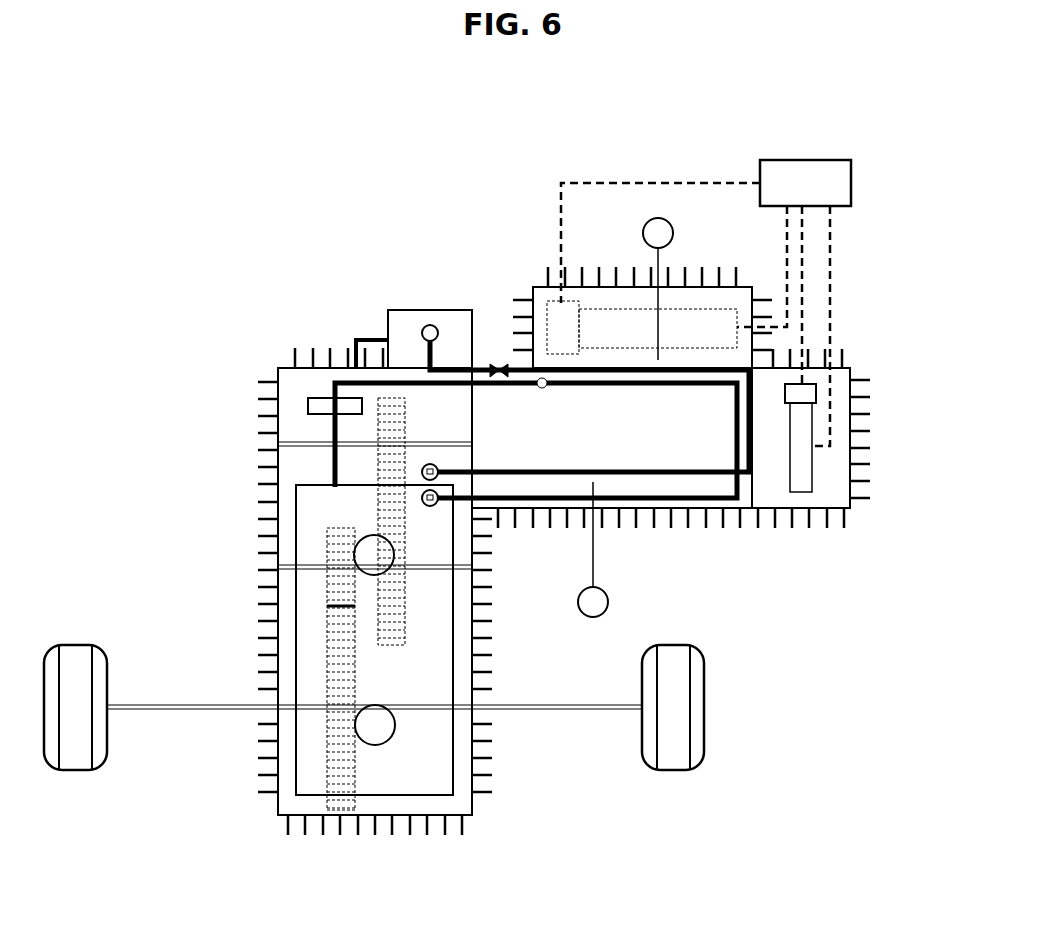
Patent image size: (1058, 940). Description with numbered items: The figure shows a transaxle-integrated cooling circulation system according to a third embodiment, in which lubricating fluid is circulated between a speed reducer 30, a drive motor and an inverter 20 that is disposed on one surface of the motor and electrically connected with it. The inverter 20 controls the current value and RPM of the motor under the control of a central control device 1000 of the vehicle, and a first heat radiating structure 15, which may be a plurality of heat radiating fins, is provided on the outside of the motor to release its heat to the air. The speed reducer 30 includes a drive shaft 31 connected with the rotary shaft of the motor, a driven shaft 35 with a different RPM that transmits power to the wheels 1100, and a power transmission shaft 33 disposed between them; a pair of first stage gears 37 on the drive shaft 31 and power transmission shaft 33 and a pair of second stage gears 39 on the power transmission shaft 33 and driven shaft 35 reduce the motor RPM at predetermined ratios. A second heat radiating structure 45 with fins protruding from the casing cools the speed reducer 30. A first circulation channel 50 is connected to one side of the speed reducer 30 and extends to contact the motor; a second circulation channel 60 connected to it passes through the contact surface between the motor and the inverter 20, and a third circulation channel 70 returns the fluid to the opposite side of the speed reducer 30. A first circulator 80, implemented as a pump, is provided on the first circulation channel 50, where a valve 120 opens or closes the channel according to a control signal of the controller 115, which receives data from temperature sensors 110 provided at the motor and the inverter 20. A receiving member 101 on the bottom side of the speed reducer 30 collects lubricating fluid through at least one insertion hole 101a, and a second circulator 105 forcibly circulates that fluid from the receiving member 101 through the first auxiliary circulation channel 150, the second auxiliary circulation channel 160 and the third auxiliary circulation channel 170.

The first heat radiating structure 15 is at (758, 517).
The inverter 20 is at (605, 315).
The speed reducer 30 is at (389, 602).
The drive shaft 31 is at (315, 441).
The power transmission shaft 33 is at (297, 558).
The driven shaft 35 is at (148, 705).
The first stage gears 37 is at (377, 517).
The second stage gears 39 is at (328, 630).
The second heat radiating structure 45 is at (288, 835).
The first circulation channel 50 is at (453, 358).
The second circulation channel 60 is at (753, 357).
The third circulation channel 70 is at (618, 477).
The first circulator 80 is at (388, 310).
The receiving member 101 is at (453, 635).
The insertion hole 101a is at (394, 552).
The second circulator 105 is at (308, 403).
The temperature sensors 110 is at (675, 228).
The controller 115 is at (550, 305).
The valve 120 is at (502, 364).
The first auxiliary circulation channel 150 is at (377, 400).
The second auxiliary circulation channel 160 is at (840, 362).
The third auxiliary circulation channel 170 is at (697, 500).
The central control device 1000 is at (805, 158).
The wheels 1100 is at (78, 763).